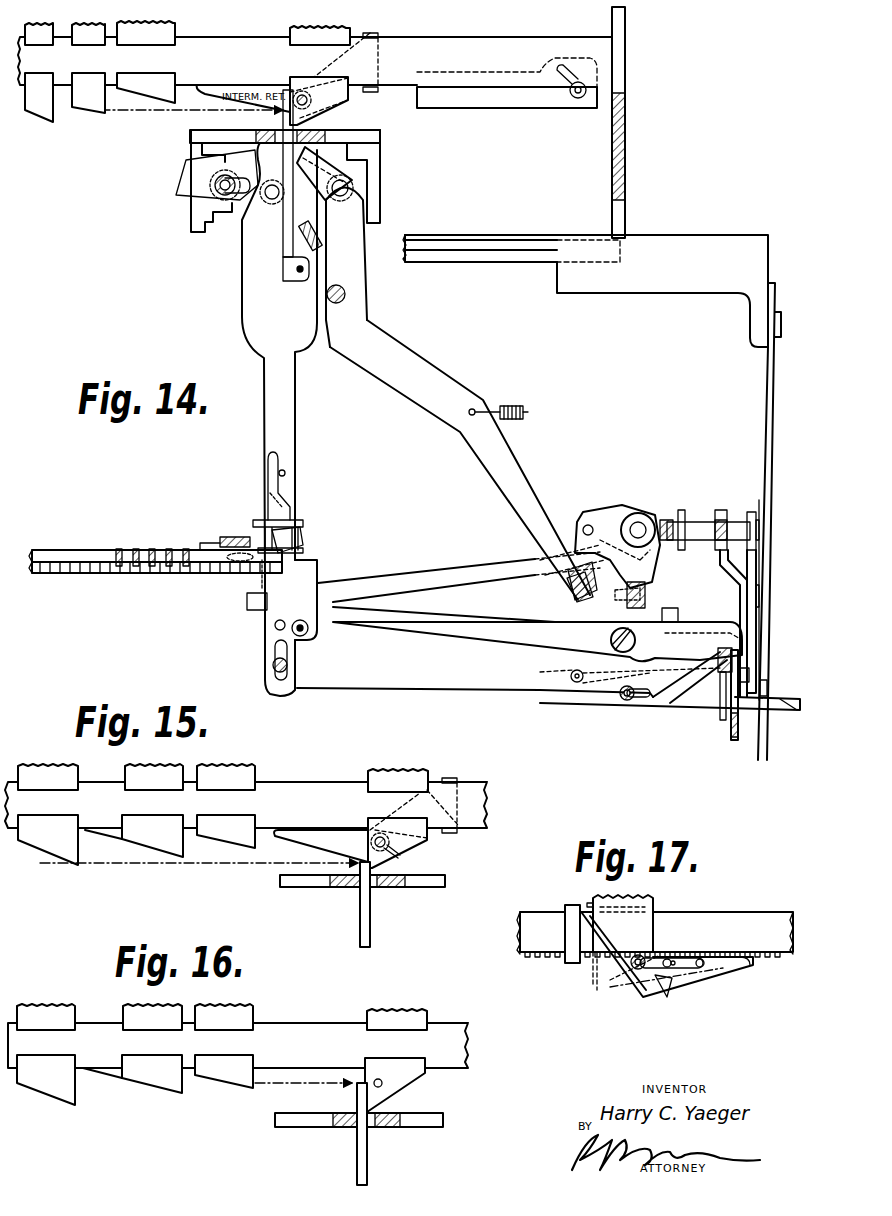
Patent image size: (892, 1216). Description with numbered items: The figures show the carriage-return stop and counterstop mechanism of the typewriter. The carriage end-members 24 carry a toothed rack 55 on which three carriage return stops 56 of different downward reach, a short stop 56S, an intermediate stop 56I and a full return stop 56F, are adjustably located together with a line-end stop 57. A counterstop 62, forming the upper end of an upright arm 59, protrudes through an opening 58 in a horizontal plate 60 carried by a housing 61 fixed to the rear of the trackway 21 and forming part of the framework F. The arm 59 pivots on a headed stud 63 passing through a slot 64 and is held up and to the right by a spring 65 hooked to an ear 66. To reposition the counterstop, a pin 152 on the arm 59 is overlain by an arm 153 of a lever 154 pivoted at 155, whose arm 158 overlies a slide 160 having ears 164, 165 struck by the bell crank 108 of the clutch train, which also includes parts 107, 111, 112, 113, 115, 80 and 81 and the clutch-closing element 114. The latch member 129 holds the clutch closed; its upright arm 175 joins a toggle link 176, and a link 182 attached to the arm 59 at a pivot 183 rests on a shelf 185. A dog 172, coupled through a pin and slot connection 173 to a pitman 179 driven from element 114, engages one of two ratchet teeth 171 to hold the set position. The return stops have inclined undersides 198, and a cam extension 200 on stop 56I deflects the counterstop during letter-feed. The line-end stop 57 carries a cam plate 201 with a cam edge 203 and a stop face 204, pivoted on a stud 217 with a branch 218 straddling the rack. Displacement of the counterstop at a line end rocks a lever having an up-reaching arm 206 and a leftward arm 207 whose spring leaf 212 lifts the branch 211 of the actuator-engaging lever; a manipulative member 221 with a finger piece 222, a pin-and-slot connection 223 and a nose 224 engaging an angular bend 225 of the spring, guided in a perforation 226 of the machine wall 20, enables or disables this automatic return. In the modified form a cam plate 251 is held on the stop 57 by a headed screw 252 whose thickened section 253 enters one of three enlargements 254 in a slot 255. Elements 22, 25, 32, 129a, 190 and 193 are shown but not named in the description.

In FIG. 14, the machine wall 20 is at (765, 455).
In FIG. 14, the trackway 21 is at (673, 294).
In FIG. 14, the vertical plate 22 is at (630, 140).
In FIG. 14, the carriage end-members 24 is at (612, 183).
In FIG. 14, the bar 25 is at (470, 262).
In FIG. 14, the rack 32 is at (187, 550).
In FIG. 15, the toothed rack 55 is at (318, 786).
In FIG. 16, the toothed rack 55 is at (318, 1026).
In FIG. 17, the toothed rack 55 is at (520, 932).
In FIG. 15, the carriage return stops 56 is at (245, 768).
In FIG. 16, the carriage return stops 56 is at (230, 1008).
In FIG. 14, the full return stop 56F is at (40, 28).
In FIG. 14, the intermediate return stop 56I is at (92, 28).
In FIG. 14, the short return stop 56S is at (172, 19).
In FIG. 14, the line-end stop 57 is at (320, 25).
In FIG. 15, the line-end stop 57 is at (415, 762).
In FIG. 16, the line-end stop 57 is at (420, 1077).
In FIG. 17, the line-end stop 57 is at (667, 932).
In FIG. 14, the opening 58 is at (272, 134).
In FIG. 15, the opening 58 is at (375, 887).
In FIG. 16, the opening 58 is at (368, 1120).
In FIG. 14, the upright counterstop arm 59 is at (302, 423).
In FIG. 14, the horizontal plate 60 is at (356, 133).
In FIG. 15, the horizontal plate 60 is at (317, 887).
In FIG. 16, the horizontal plate 60 is at (400, 1113).
In FIG. 14, the housing 61 is at (382, 198).
In FIG. 14, the counterstop 62 is at (288, 248).
In FIG. 15, the counterstop 62 is at (360, 930).
In FIG. 16, the counterstop 62 is at (357, 1167).
In FIG. 14, the headed stud 63 is at (283, 665).
In FIG. 14, the slot 64 is at (277, 655).
In FIG. 14, the spring 65 is at (313, 252).
In FIG. 14, the ear 66 is at (296, 284).
In FIG. 14, the clutch train part 80 is at (638, 528).
In FIG. 14, the clutch train part 81 is at (647, 588).
In FIG. 14, the clutch train part 107 is at (717, 510).
In FIG. 14, the bell crank 108 is at (727, 573).
In FIG. 14, the clutch train part 111 is at (757, 557).
In FIG. 14, the clutch train part 112 is at (745, 512).
In FIG. 14, the clutch train part 113 is at (682, 510).
In FIG. 14, the clutch-closing element 114 is at (650, 512).
In FIG. 14, the clutch train part 115 is at (588, 522).
In FIG. 14, the latch member 129 is at (418, 353).
In FIG. 14, the adjusting screw 129a is at (507, 404).
In FIG. 14, the pin 152 is at (277, 625).
In FIG. 14, the lever arm 153 is at (462, 620).
In FIG. 14, the transversely extending lever 154 is at (527, 607).
In FIG. 14, the pivot 155 is at (612, 640).
In FIG. 14, the rightwardly extending arm 158 is at (718, 633).
In FIG. 14, the slide 160 is at (739, 720).
In FIG. 14, the ear 164 is at (750, 670).
In FIG. 14, the ear 165 is at (753, 682).
In FIG. 14, the ratchet teeth 171 is at (310, 530).
In FIG. 14, the dog 172 is at (300, 547).
In FIG. 14, the pin and slot connection 173 is at (317, 577).
In FIG. 14, the upright arm 175 is at (362, 252).
In FIG. 14, the toggle link 176 is at (318, 195).
In FIG. 14, the pitman 179 is at (465, 570).
In FIG. 14, the link 182 is at (240, 204).
In FIG. 14, the pivotal connection 183 is at (267, 200).
In FIG. 14, the shelf 185 is at (213, 230).
In FIG. 14, the bar 190 is at (488, 108).
In FIG. 14, the pivot 193 is at (580, 100).
In FIG. 15, the inclined undersides 198 is at (60, 860).
In FIG. 16, the inclined undersides 198 is at (45, 1090).
In FIG. 15, the inclined cam extension 200 is at (110, 838).
In FIG. 14, the cam plate 201 is at (286, 474).
In FIG. 15, the cam edge 203 is at (295, 848).
In FIG. 14, the stop face 204 is at (312, 130).
In FIG. 15, the stop face 204 is at (368, 822).
In FIG. 16, the stop face 204 is at (362, 1087).
In FIG. 17, the stop face 204 is at (653, 998).
In FIG. 14, the up-reaching arm 206 is at (300, 580).
In FIG. 14, the lever arm 207 is at (517, 689).
In FIG. 14, the rearward branch 211 is at (732, 672).
In FIG. 14, the spring leaf 212 is at (720, 668).
In FIG. 15, the pivot stud 217 is at (395, 855).
In FIG. 15, the branch 218 is at (457, 833).
In FIG. 17, the branch 218 is at (563, 917).
In FIG. 14, the manipulative member 221 is at (720, 700).
In FIG. 14, the finger piece 222 is at (773, 708).
In FIG. 14, the pin-and-slot connection 223 is at (628, 700).
In FIG. 14, the nose 224 is at (610, 697).
In FIG. 14, the angular bend 225 is at (571, 676).
In FIG. 14, the perforation 226 is at (770, 688).
In FIG. 17, the modified cam plate 251 is at (667, 998).
In FIG. 17, the headed screw 252 is at (636, 970).
In FIG. 17, the thickened section 253 is at (643, 970).
In FIG. 17, the enlargements 254 is at (673, 965).
In FIG. 17, the slot 255 is at (683, 960).
In FIG. 14, the framework F is at (742, 233).